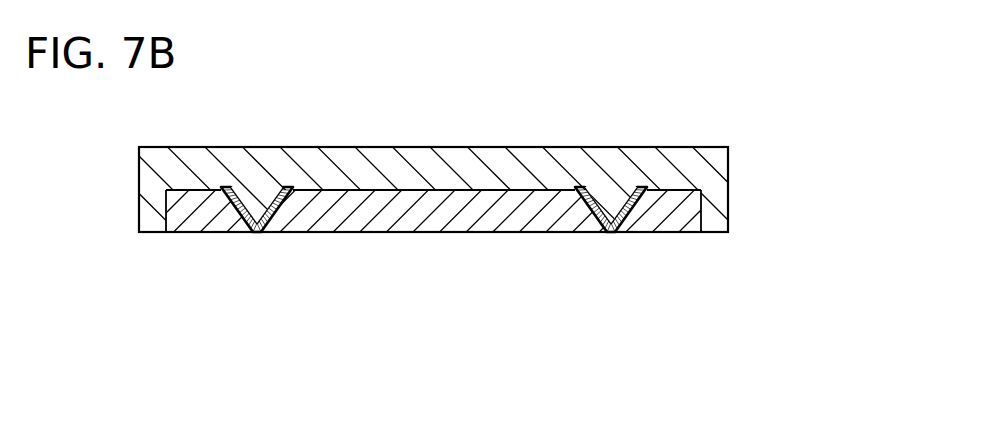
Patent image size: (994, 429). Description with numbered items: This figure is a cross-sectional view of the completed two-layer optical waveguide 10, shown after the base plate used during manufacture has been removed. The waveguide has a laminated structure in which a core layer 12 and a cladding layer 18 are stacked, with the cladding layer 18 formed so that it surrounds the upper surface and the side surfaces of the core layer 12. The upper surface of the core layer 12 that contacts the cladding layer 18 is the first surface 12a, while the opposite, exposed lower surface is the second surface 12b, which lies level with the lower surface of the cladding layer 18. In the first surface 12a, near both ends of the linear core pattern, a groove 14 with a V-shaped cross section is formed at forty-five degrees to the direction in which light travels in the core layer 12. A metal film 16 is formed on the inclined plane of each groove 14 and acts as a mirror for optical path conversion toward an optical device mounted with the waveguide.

The two-layer optical waveguide 10 is at (193, 270).
The core layer 12 is at (430, 205).
The first surface 12a is at (487, 190).
The second surface 12b is at (373, 233).
The groove 14 is at (288, 212).
The metal film 16 is at (236, 202).
The cladding layer 18 is at (414, 155).